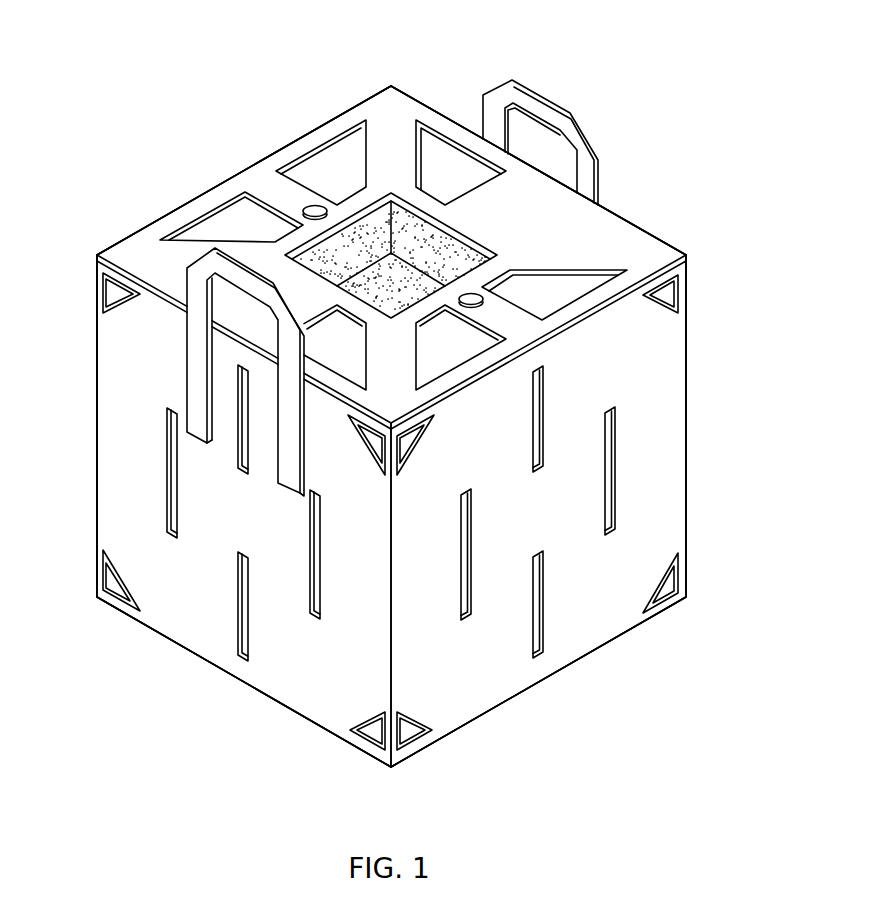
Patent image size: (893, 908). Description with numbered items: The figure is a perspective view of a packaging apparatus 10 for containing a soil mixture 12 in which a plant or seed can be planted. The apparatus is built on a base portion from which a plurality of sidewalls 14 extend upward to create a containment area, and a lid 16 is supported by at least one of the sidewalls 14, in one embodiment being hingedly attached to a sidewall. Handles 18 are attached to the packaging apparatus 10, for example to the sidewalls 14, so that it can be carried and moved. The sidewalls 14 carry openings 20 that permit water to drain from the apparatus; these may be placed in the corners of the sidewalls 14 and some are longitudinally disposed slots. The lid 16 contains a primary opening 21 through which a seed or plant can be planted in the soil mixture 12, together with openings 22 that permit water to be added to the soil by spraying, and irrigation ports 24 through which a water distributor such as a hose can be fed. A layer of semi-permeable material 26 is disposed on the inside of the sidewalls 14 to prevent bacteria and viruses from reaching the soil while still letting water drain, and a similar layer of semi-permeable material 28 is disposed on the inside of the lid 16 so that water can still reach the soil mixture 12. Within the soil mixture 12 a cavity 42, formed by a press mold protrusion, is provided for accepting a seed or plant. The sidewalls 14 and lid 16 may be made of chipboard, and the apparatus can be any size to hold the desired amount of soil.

The packaging apparatus 10 is at (750, 150).
The soil mixture 12 is at (350, 243).
The sidewalls 14 is at (135, 435).
The lid 16 is at (273, 188).
The handles 18 is at (583, 168).
The openings 20 is at (103, 597).
The primary opening 21 is at (403, 193).
The openings 22 is at (208, 217).
The irrigation ports 24 is at (313, 205).
The layer of semi-permeable material 26 is at (108, 292).
The layer of semi-permeable material 28 is at (437, 160).
The cavity 42 is at (377, 217).